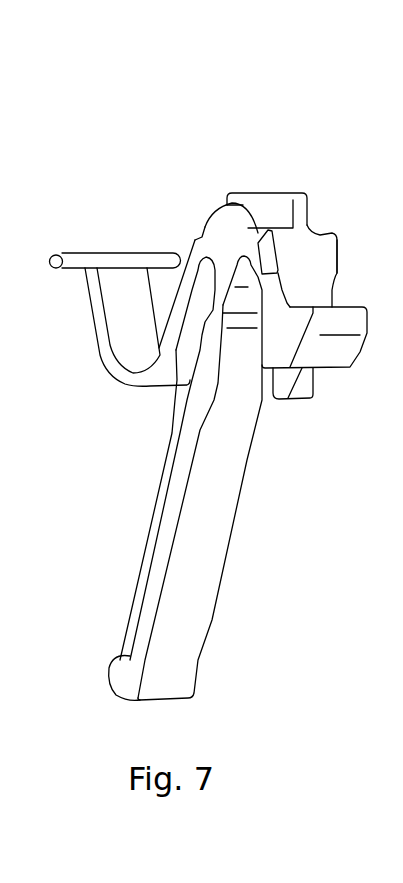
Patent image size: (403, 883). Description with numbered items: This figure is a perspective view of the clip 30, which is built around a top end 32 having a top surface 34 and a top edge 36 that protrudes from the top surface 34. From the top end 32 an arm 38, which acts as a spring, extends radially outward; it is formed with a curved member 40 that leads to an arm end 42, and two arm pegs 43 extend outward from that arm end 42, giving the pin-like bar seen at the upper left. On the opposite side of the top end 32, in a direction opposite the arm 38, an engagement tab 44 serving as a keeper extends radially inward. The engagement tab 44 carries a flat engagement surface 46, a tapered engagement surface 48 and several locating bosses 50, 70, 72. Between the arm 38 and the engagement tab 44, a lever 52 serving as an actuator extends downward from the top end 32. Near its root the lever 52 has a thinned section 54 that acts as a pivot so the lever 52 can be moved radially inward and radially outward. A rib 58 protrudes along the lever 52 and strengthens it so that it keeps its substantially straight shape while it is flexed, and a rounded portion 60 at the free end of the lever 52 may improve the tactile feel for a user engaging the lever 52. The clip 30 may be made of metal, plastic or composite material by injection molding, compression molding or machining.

The clip 30 is at (130, 163).
The top end 32 is at (265, 148).
The top surface 34 is at (321, 233).
The top edge 36 is at (277, 193).
The arm 38 is at (105, 393).
The curved member 40 is at (152, 388).
The arm end 42 is at (120, 257).
The arm pegs 43 is at (60, 255).
The engagement tab 44 is at (304, 423).
The flat engagement surface 46 is at (344, 307).
The tapered engagement surface 48 is at (338, 352).
The locating boss 50 is at (280, 400).
The lever 52 is at (228, 652).
The thinned section 54 is at (248, 294).
The rib 58 is at (147, 557).
The rounded portion 60 is at (113, 693).
The locating boss 70 is at (264, 232).
The locating boss 72 is at (337, 247).